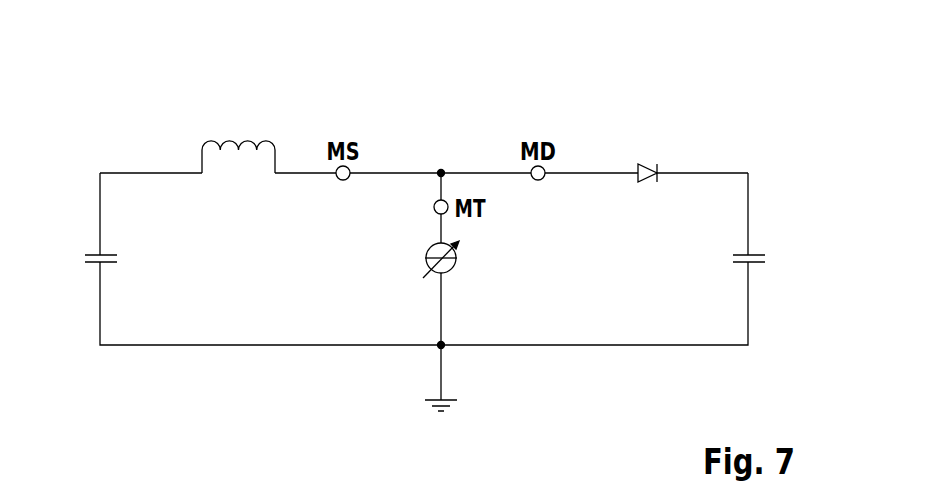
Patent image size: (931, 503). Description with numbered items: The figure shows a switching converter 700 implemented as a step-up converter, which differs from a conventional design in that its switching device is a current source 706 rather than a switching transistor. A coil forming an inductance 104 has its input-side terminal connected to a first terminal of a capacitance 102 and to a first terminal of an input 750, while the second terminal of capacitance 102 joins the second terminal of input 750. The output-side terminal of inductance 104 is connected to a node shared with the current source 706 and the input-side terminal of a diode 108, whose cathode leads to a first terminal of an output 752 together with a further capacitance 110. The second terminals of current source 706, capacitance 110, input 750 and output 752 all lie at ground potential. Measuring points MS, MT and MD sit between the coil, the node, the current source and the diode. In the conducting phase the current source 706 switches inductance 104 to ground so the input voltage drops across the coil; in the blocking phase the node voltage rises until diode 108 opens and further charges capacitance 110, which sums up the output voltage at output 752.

The capacitance 102 is at (93, 254).
The inductance 104 is at (240, 141).
The diode 108 is at (652, 166).
The capacitance 110 is at (756, 254).
The switching converter 700 is at (712, 97).
The current source 706 is at (457, 251).
The input 750 is at (90, 268).
The output 752 is at (760, 268).